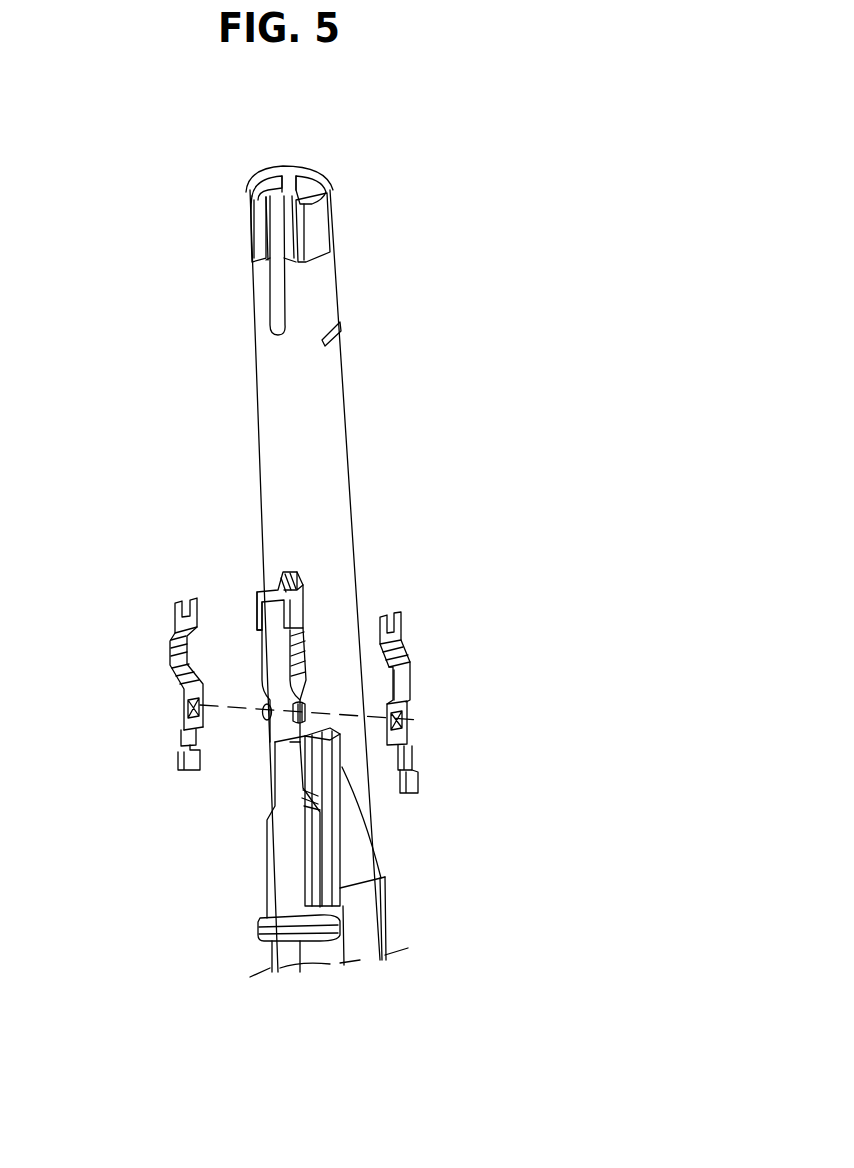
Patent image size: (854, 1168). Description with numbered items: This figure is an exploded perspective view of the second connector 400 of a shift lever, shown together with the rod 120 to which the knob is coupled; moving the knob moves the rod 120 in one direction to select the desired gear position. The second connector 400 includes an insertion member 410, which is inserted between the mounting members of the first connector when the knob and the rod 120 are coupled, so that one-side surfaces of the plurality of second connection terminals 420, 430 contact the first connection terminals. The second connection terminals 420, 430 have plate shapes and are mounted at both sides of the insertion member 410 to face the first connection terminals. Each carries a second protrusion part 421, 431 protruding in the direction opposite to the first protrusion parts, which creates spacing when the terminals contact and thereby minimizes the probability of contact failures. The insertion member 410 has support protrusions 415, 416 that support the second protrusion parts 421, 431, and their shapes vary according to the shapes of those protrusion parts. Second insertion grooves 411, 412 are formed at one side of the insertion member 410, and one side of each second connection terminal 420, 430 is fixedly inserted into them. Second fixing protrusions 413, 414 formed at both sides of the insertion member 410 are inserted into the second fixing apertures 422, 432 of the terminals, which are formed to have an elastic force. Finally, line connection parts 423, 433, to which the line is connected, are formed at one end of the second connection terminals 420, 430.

The rod 120 is at (332, 450).
The second connector 400 is at (146, 827).
The insertion member 410 is at (282, 752).
The second insertion groove 411 is at (298, 578).
The second insertion groove 412 is at (250, 610).
The second fixing protrusion 413 is at (298, 735).
The second fixing protrusion 414 is at (263, 711).
The support protrusion 415 is at (306, 656).
The support protrusion 416 is at (262, 668).
The second connection terminal 420 is at (447, 705).
The second protrusion part 421 is at (406, 678).
The second fixing aperture 422 is at (406, 718).
The line connection part 423 is at (413, 781).
The second connection terminal 430 is at (141, 689).
The second protrusion part 431 is at (178, 654).
The second fixing aperture 432 is at (190, 705).
The line connection part 433 is at (175, 760).